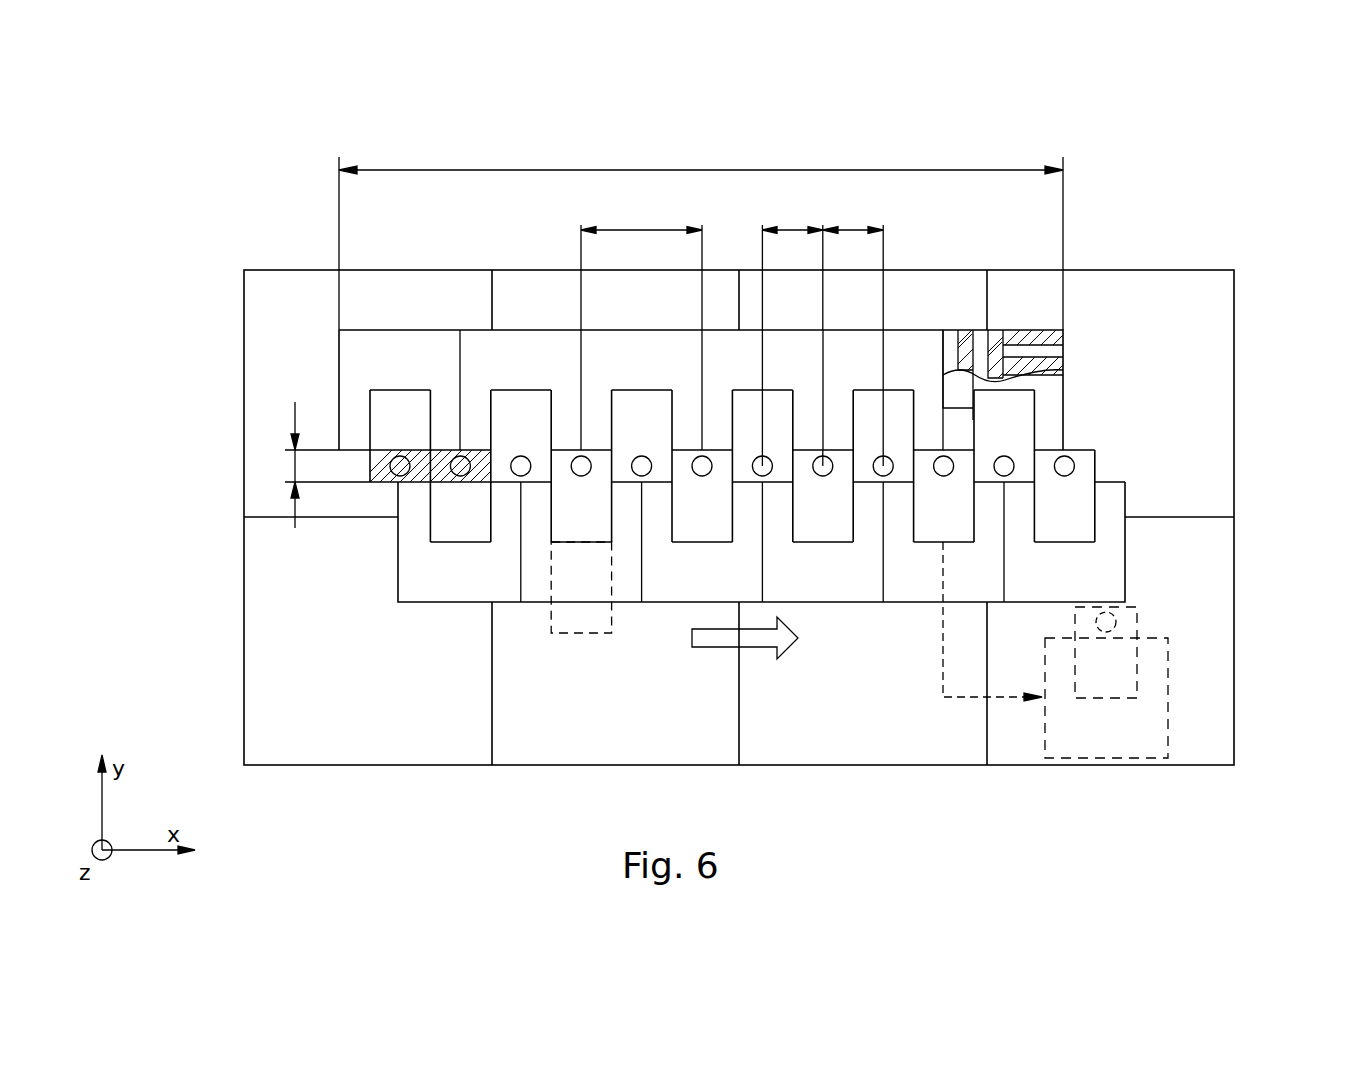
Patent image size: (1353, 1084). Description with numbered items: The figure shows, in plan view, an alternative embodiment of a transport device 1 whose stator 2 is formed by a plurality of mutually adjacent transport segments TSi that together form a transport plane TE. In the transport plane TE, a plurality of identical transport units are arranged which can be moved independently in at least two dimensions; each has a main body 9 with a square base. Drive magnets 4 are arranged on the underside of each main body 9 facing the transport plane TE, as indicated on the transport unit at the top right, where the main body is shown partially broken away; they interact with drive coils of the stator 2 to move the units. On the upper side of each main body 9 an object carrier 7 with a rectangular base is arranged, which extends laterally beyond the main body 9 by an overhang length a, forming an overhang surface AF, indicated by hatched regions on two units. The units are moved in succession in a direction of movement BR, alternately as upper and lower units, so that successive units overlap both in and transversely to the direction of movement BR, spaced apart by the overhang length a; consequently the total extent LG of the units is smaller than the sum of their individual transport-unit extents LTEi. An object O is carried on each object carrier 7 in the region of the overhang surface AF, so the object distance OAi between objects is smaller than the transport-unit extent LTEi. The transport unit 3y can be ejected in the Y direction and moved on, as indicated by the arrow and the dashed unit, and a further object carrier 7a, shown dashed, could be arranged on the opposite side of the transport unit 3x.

The transport device 1 is at (157, 193).
The stator 2 is at (1235, 285).
The drive magnets 4 is at (1030, 323).
The object carrier 7 is at (578, 508).
The further object carrier 7a is at (577, 613).
The main body 9 is at (445, 370).
The transport unit 3x is at (538, 575).
The transport unit 3y is at (932, 518).
The object O is at (1066, 464).
The overhang surface AF is at (436, 478).
The transport plane TE is at (299, 328).
The transport segments TSi is at (243, 537).
The direction of movement BR is at (755, 637).
The total extent LG is at (701, 236).
The transport-unit extent LTEi is at (641, 266).
The opening spacing OAi is at (822, 333).
The overhang length a is at (285, 465).